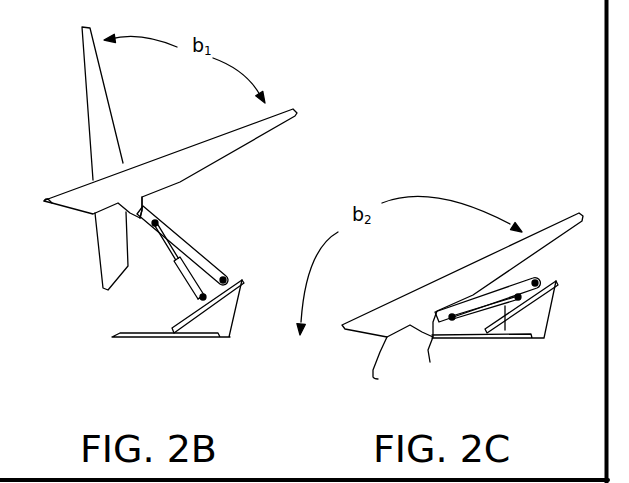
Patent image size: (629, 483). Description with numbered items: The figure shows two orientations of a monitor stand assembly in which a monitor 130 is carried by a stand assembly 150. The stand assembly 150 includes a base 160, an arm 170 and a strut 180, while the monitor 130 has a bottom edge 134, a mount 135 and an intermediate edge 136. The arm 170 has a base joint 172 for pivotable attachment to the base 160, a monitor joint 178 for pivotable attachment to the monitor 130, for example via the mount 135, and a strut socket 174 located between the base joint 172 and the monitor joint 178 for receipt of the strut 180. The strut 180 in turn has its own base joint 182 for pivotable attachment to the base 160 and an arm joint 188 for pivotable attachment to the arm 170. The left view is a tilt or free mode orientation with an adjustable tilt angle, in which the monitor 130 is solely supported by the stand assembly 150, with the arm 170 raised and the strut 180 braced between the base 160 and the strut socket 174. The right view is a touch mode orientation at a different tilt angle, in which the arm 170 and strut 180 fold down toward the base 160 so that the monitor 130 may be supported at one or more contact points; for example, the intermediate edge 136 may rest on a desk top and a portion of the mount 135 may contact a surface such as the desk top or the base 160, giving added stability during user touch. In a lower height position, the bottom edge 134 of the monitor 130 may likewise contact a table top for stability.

In FIG. 2B, the monitor 130 is at (298, 106).
In FIG. 2C, the monitor 130 is at (569, 222).
In FIG. 2B, the bottom edge 134 is at (47, 201).
In FIG. 2C, the mount 135 is at (430, 362).
In FIG. 2B, the intermediate edge 136 is at (87, 218).
In FIG. 2C, the intermediate edge 136 is at (378, 379).
In FIG. 2B, the stand assembly 150 is at (144, 286).
In FIG. 2C, the stand assembly 150 is at (495, 332).
In FIG. 2B, the base 160 is at (178, 172).
In FIG. 2B, the arm 170 is at (192, 248).
In FIG. 2C, the arm 170 is at (487, 300).
In FIG. 2B, the base joint 172 is at (227, 282).
In FIG. 2C, the base joint 172 is at (521, 306).
In FIG. 2B, the strut socket 174 is at (160, 223).
In FIG. 2C, the strut socket 174 is at (452, 317).
In FIG. 2B, the monitor joint 178 is at (147, 205).
In FIG. 2B, the strut 180 is at (185, 273).
In FIG. 2C, the strut 180 is at (486, 306).
In FIG. 2B, the base joint 182 is at (187, 312).
In FIG. 2B, the arm joint 188 is at (158, 233).